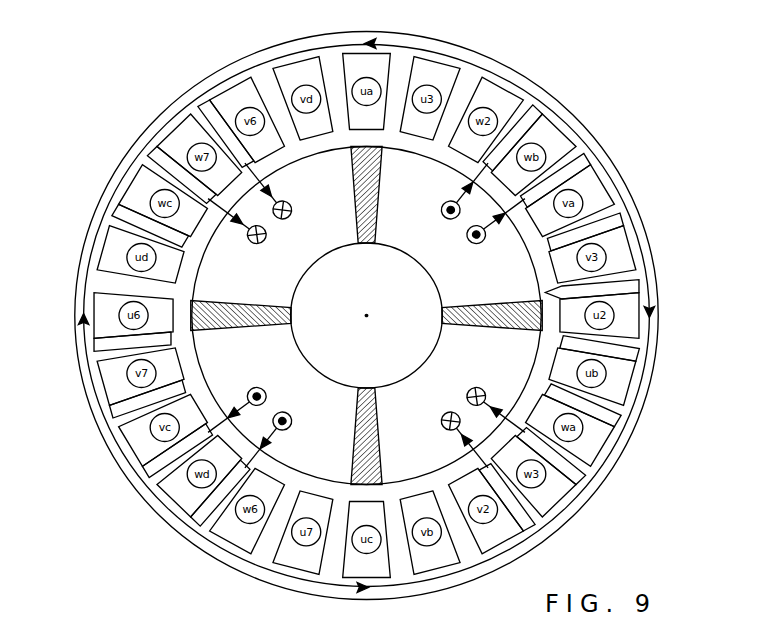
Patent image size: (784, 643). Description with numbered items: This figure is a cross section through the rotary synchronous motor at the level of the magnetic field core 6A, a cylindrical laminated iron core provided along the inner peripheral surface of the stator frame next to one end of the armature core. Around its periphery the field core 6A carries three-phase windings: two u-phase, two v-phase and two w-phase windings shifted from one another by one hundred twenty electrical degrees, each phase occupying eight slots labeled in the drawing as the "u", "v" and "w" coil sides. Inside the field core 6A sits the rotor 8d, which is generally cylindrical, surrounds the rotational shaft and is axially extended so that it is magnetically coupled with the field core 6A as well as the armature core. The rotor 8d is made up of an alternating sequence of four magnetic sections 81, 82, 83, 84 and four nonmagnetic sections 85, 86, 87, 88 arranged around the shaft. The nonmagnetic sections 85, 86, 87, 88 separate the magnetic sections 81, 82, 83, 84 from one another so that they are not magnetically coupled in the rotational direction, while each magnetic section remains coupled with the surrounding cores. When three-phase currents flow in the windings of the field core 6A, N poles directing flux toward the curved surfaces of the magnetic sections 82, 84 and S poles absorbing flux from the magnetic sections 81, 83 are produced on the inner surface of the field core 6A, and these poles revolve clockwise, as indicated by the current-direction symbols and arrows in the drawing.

The magnetic field core 6A is at (543, 110).
The nonmagnetic section 85 is at (377, 156).
The nonmagnetic section 86 is at (558, 342).
The nonmagnetic section 87 is at (380, 480).
The rotor 8d is at (563, 290).
The magnetic section 81 is at (485, 260).
The magnetic section 82 is at (503, 373).
The magnetic section 83 is at (230, 375).
The magnetic section 84 is at (213, 247).
The nonmagnetic section 88 is at (78, 340).